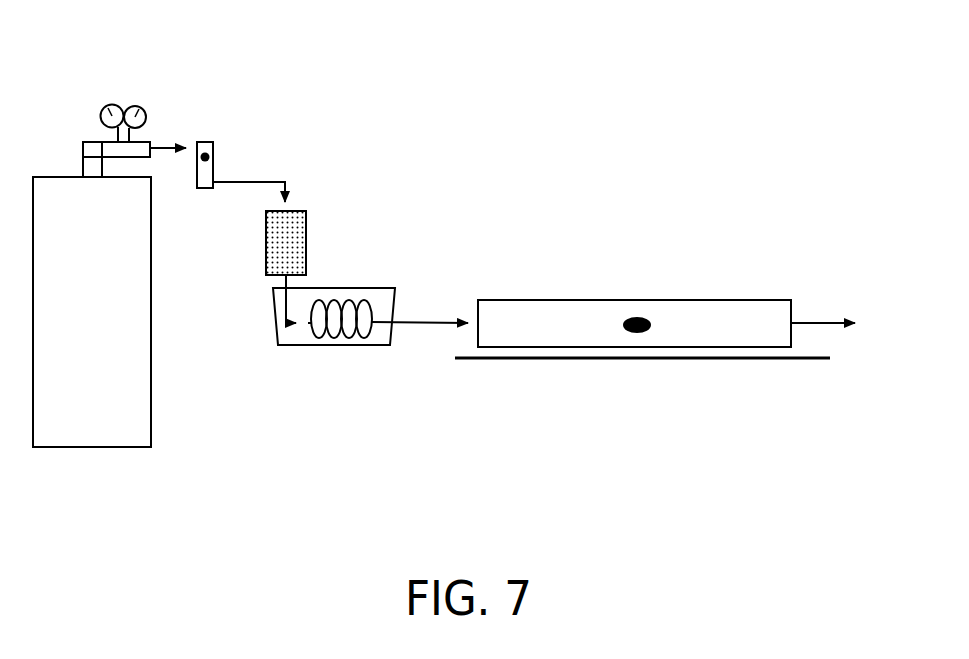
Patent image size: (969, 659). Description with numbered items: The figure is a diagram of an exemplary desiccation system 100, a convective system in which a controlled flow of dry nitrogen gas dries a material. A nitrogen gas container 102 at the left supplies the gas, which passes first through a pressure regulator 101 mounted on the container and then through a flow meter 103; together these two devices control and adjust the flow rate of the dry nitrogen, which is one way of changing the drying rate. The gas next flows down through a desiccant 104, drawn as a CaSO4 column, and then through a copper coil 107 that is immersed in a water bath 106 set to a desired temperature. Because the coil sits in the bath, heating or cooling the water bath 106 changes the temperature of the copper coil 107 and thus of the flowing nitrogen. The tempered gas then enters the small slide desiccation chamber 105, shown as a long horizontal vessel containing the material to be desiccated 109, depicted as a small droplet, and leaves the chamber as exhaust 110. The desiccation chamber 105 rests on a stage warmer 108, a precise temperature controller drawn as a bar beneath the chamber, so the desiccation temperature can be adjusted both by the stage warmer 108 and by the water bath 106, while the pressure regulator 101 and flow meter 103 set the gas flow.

The desiccation system 100 is at (481, 112).
The pressure regulator 101 is at (94, 106).
The nitrogen gas container 102 is at (90, 466).
The flow meter 103 is at (226, 167).
The desiccant 104 is at (300, 248).
The desiccation chamber 105 is at (667, 291).
The water bath 106 is at (292, 358).
The copper coil 107 is at (357, 346).
The stage warmer 108 is at (588, 371).
The material to be desiccated 109 is at (658, 330).
The exhaust 110 is at (866, 297).